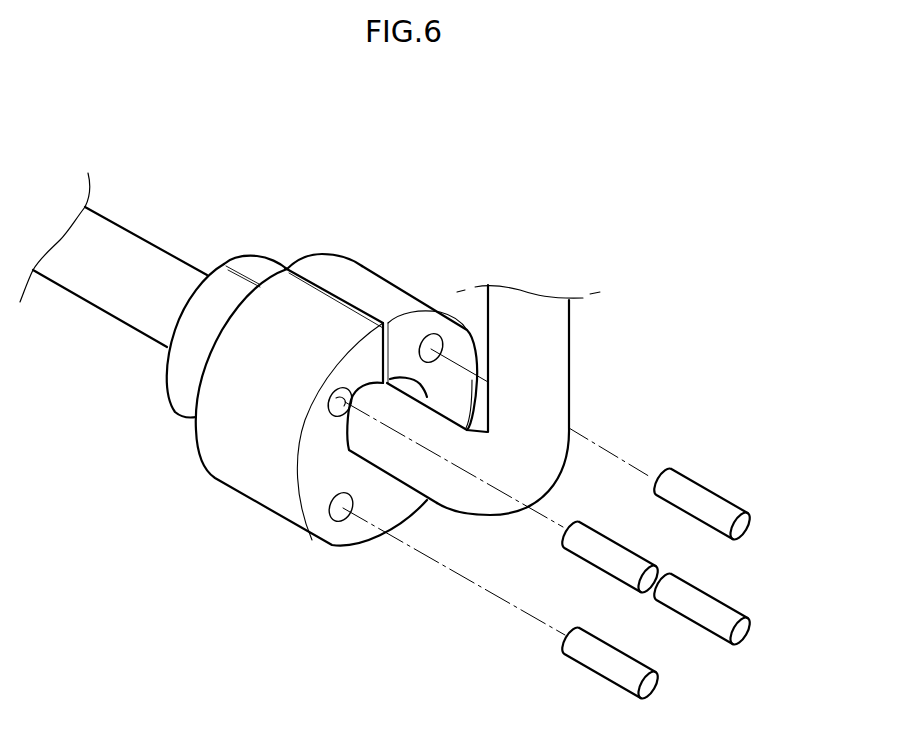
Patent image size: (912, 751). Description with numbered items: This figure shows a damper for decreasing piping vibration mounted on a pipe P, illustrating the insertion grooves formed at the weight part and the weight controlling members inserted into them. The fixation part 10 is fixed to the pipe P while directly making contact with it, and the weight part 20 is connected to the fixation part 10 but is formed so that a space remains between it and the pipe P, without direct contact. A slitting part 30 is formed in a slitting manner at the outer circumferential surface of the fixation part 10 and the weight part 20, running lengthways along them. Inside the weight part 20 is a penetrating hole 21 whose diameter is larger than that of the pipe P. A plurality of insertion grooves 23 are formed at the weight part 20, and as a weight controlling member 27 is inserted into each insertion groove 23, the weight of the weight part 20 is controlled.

The pipe P is at (122, 247).
The slitting part 30 is at (221, 262).
The fixation part 10 is at (274, 255).
The weight part 20 is at (412, 277).
The penetrating hole 21 is at (358, 466).
The insertion groove 23 is at (343, 407).
The weight controlling member 27 is at (617, 660).